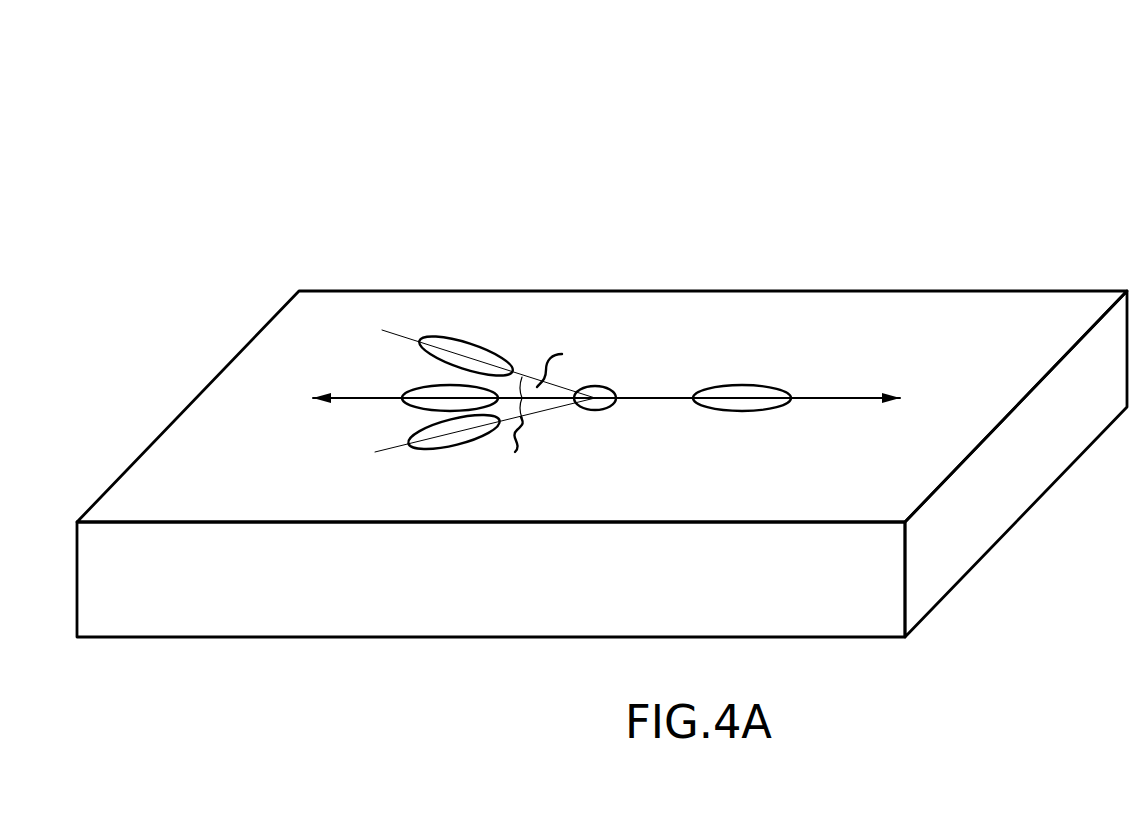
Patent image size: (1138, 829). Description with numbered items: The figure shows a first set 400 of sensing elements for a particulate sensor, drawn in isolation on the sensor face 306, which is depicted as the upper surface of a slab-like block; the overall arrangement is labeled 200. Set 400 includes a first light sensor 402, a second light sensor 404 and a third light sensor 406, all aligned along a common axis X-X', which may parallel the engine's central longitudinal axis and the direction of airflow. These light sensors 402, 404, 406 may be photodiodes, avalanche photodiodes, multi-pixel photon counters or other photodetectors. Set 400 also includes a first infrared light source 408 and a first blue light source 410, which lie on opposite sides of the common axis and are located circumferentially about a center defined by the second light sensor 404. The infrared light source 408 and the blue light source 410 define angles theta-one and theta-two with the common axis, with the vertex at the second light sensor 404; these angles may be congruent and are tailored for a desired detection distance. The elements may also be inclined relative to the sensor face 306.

The device / assembly 200 is at (986, 122).
The sensor face 306 is at (986, 308).
The first set 400 is at (694, 253).
The first light sensor 402 is at (780, 390).
The second light sensor 404 is at (613, 383).
The third light sensor 406 is at (423, 387).
The first infrared light source 408 is at (408, 447).
The first blue light source 410 is at (425, 342).